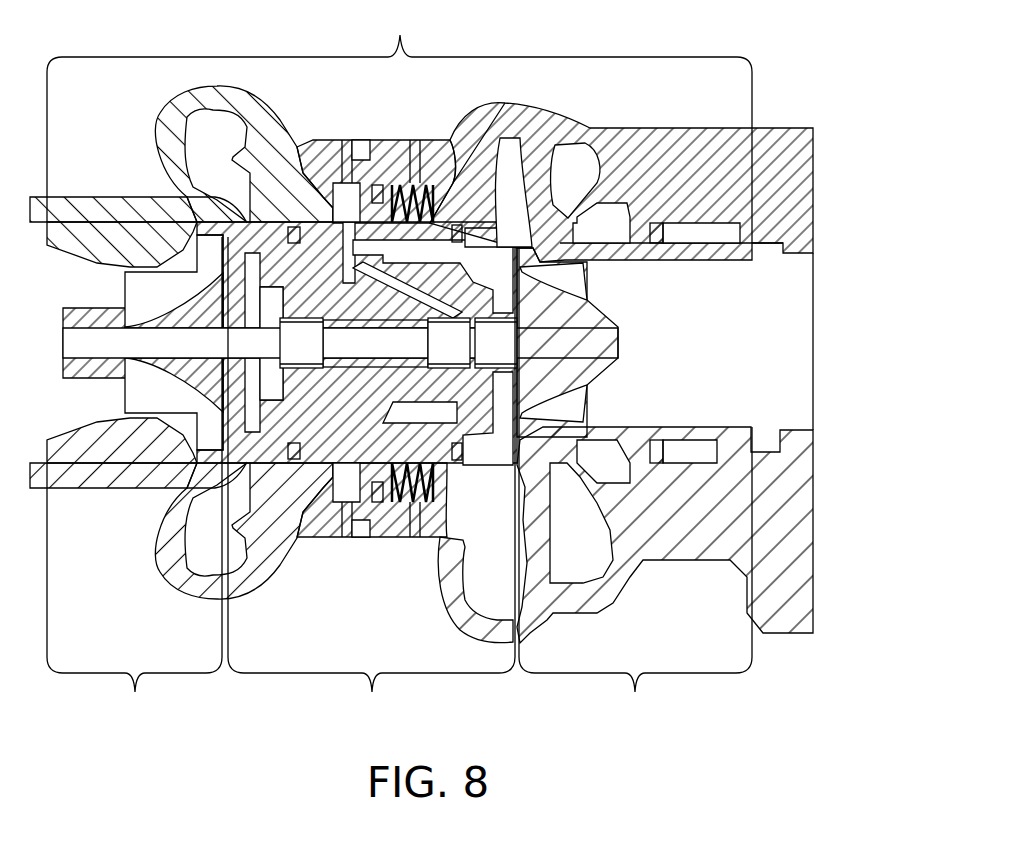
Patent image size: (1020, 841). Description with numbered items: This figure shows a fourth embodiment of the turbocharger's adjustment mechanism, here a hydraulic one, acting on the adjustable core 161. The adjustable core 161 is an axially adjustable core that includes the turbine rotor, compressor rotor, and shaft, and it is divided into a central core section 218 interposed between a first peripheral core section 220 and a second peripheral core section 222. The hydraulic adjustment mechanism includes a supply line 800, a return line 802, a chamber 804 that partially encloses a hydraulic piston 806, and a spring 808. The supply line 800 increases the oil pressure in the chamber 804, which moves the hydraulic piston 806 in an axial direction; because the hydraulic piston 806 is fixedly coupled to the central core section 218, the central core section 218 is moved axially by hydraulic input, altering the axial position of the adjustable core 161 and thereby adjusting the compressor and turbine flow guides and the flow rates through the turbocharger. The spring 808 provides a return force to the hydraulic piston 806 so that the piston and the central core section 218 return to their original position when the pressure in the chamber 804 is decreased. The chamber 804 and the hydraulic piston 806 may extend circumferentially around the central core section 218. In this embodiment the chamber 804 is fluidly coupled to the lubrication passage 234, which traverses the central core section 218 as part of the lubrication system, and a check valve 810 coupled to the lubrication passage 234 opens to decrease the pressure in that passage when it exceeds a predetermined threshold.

The adjustable core 161 is at (399, 125).
The central core section 218 is at (340, 434).
The first peripheral core section 220 is at (181, 407).
The second peripheral core section 222 is at (621, 415).
The lubrication passage 234 is at (183, 192).
The supply line 800 is at (327, 140).
The return line 802 is at (415, 154).
The chamber 804 is at (297, 148).
The hydraulic piston 806 is at (375, 183).
The spring 808 is at (448, 138).
The check valve 810 is at (512, 138).